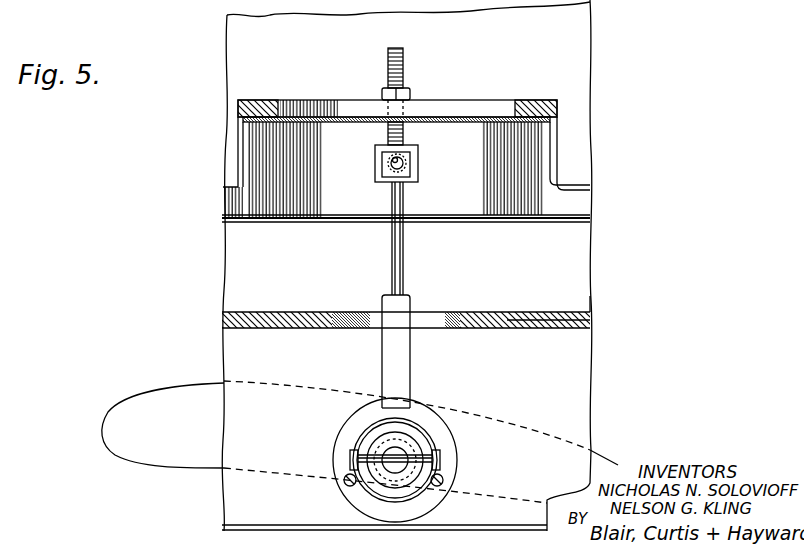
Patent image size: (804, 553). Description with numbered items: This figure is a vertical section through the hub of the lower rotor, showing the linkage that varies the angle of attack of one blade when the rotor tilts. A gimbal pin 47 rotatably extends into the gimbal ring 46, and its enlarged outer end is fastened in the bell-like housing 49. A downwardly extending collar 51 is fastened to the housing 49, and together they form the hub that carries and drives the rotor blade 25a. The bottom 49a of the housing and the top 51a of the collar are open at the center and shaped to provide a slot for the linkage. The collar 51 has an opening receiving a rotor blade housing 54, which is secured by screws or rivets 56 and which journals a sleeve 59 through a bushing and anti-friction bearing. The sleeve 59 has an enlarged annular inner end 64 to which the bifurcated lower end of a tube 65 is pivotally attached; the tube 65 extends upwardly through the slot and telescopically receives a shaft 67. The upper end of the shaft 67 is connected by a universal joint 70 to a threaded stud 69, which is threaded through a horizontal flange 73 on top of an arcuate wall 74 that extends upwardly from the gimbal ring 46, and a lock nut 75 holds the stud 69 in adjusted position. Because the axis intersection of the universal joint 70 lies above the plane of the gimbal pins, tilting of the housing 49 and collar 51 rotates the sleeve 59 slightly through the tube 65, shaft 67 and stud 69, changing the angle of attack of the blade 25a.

The rotor blade 25a is at (487, 412).
The gimbal ring 46 is at (582, 225).
The gimbal pin 47 is at (410, 178).
The bell-like housing 49 is at (590, 280).
The bottom of housing 49a is at (583, 297).
The collar 51 is at (585, 376).
The top of collar 51a is at (583, 318).
The rotor blade housing 54 is at (342, 453).
The screws or rivets 56 is at (440, 478).
The sleeve 59 is at (428, 442).
The enlarged annular inner end 64 is at (410, 480).
The tube 65 is at (410, 362).
The shaft 67 is at (405, 265).
The threaded stud 69 is at (388, 120).
The universal joint 70 is at (418, 152).
The horizontal flange 73 is at (432, 102).
The arcuate wall 74 is at (557, 148).
The lock nut 75 is at (415, 90).